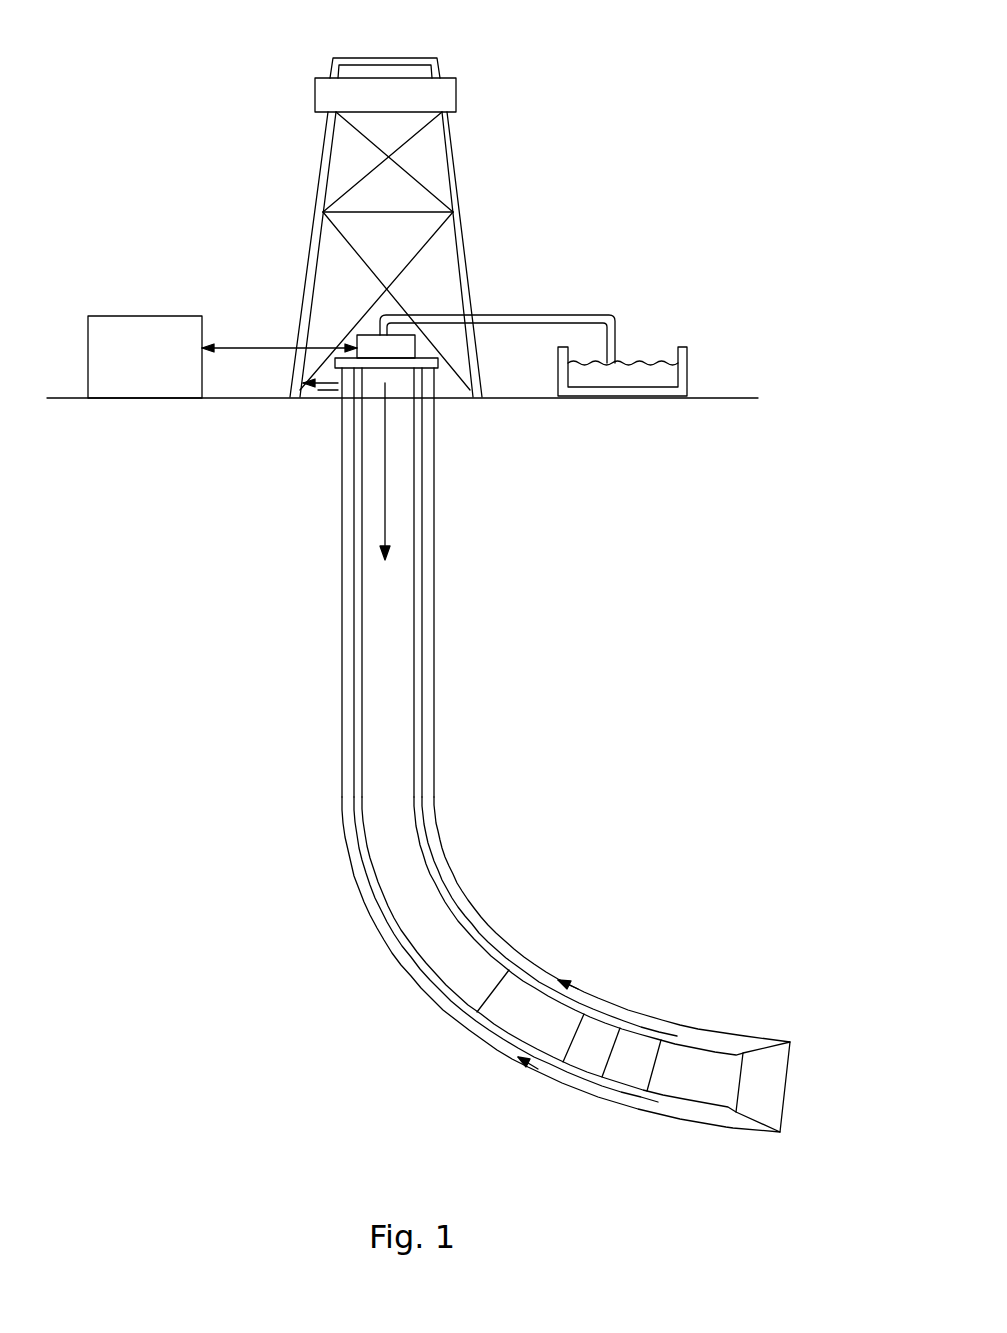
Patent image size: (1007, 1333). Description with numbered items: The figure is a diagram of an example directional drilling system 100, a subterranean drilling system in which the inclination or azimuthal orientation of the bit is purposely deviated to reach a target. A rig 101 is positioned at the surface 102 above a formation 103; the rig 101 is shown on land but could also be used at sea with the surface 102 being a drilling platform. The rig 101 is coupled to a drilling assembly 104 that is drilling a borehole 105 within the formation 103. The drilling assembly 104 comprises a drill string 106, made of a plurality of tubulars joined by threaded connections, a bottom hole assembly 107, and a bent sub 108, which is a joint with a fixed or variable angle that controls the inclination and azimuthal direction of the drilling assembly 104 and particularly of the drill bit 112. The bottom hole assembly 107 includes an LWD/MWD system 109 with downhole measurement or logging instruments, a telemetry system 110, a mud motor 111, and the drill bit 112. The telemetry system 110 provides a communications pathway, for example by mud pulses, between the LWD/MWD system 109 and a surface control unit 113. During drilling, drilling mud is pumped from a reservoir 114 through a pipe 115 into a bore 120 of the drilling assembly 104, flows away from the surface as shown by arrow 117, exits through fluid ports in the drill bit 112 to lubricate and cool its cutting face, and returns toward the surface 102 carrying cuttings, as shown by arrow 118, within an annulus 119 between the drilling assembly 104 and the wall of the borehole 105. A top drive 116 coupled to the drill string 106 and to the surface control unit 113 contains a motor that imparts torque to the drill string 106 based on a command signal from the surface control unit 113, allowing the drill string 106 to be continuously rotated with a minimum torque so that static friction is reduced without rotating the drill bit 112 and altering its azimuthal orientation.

The directional drilling system 100 is at (650, 103).
The rig 101 is at (456, 97).
The surface 102 is at (716, 396).
The formation 103 is at (640, 511).
The drilling assembly 104 is at (355, 680).
The borehole 105 is at (433, 688).
The drill string 106 is at (421, 553).
The bottom hole assembly 107 is at (640, 1003).
The bent sub 108 is at (537, 977).
The LWD/MWD system 109 is at (620, 1097).
The telemetry system 110 is at (566, 1070).
The mud motor 111 is at (712, 1043).
The drill bit 112 is at (778, 1083).
The surface control unit 113 is at (222, 357).
The reservoir 114 is at (637, 370).
The pipe 115 is at (533, 315).
The top drive 116 is at (438, 366).
The arrow 117 is at (383, 490).
The arrow 118 is at (500, 1052).
The annulus 119 is at (403, 967).
The bore 120 is at (402, 780).